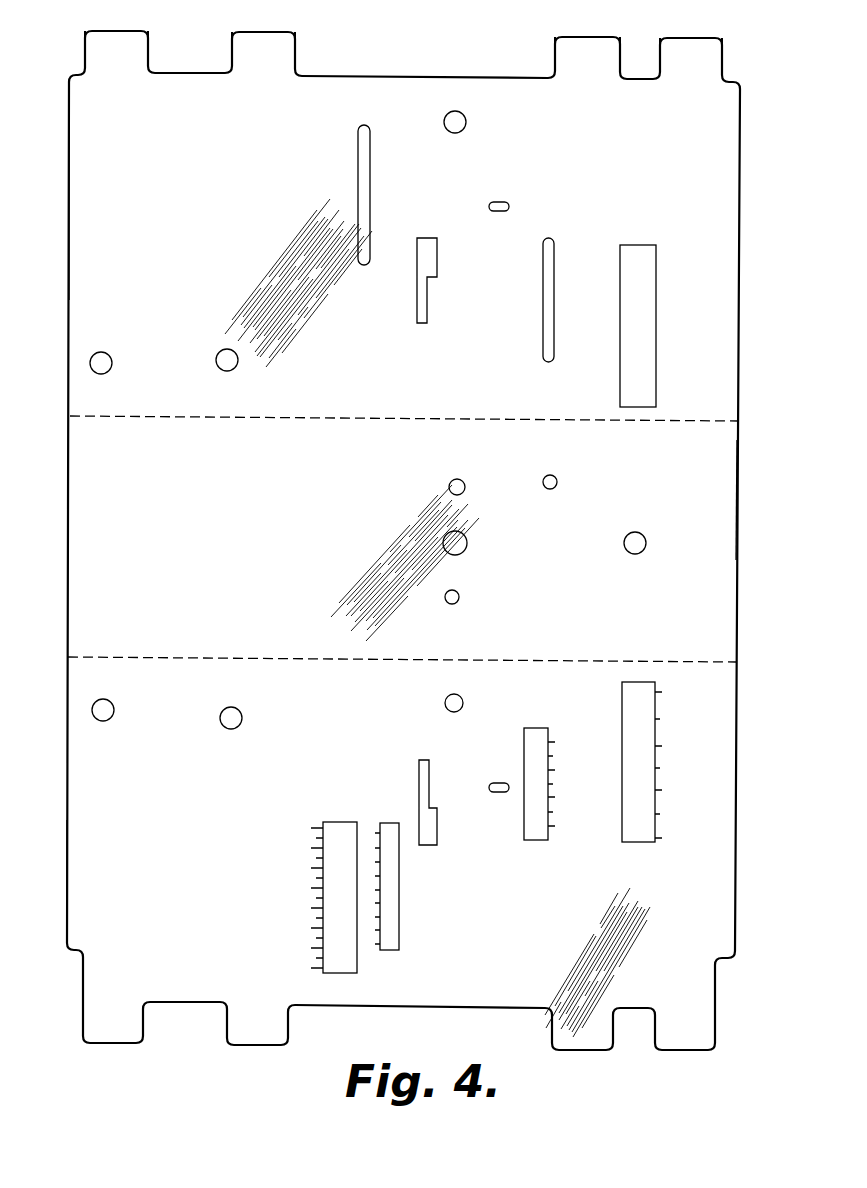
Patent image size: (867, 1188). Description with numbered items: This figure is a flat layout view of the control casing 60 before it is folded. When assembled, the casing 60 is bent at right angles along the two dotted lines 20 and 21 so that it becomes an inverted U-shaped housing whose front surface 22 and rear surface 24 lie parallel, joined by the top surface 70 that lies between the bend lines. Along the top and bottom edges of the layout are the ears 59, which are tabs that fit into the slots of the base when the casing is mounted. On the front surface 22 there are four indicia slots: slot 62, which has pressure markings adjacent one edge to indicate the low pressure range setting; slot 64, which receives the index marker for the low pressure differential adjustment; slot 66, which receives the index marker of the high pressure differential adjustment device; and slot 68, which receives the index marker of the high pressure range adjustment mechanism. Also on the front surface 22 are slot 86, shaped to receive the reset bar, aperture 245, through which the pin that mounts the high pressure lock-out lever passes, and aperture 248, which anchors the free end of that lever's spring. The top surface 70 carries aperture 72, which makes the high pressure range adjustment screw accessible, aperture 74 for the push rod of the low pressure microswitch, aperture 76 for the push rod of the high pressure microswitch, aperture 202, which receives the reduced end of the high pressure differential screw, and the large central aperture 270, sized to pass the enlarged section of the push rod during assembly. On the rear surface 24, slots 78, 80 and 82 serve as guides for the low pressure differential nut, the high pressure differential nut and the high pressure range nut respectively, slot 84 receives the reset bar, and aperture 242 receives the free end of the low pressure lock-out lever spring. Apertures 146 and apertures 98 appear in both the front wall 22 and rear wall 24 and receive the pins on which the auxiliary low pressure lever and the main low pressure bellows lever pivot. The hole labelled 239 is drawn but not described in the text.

The ears 59 is at (240, 45).
The casing 60 is at (52, 579).
The rear surface 24 is at (80, 212).
The front surface 22 is at (67, 862).
The top surface 70 is at (738, 514).
The bend line 21 is at (374, 420).
The bend line 20 is at (257, 658).
The hole 239 is at (445, 115).
The slot 78 is at (364, 175).
The aperture 242 is at (502, 202).
The slot 84 is at (425, 270).
The slot 80 is at (553, 270).
The slot 82 is at (656, 280).
The apertures 146 is at (112, 366).
The apertures 98 is at (238, 364).
The aperture 74 is at (463, 483).
The aperture 202 is at (557, 481).
The aperture 270 is at (468, 542).
The aperture 72 is at (647, 542).
The aperture 76 is at (460, 597).
The aperture 245 is at (444, 703).
The aperture 248 is at (500, 782).
The slot 86 is at (431, 778).
The slot 62 is at (345, 822).
The slot 64 is at (392, 822).
The slot 66 is at (541, 728).
The slot 68 is at (642, 682).